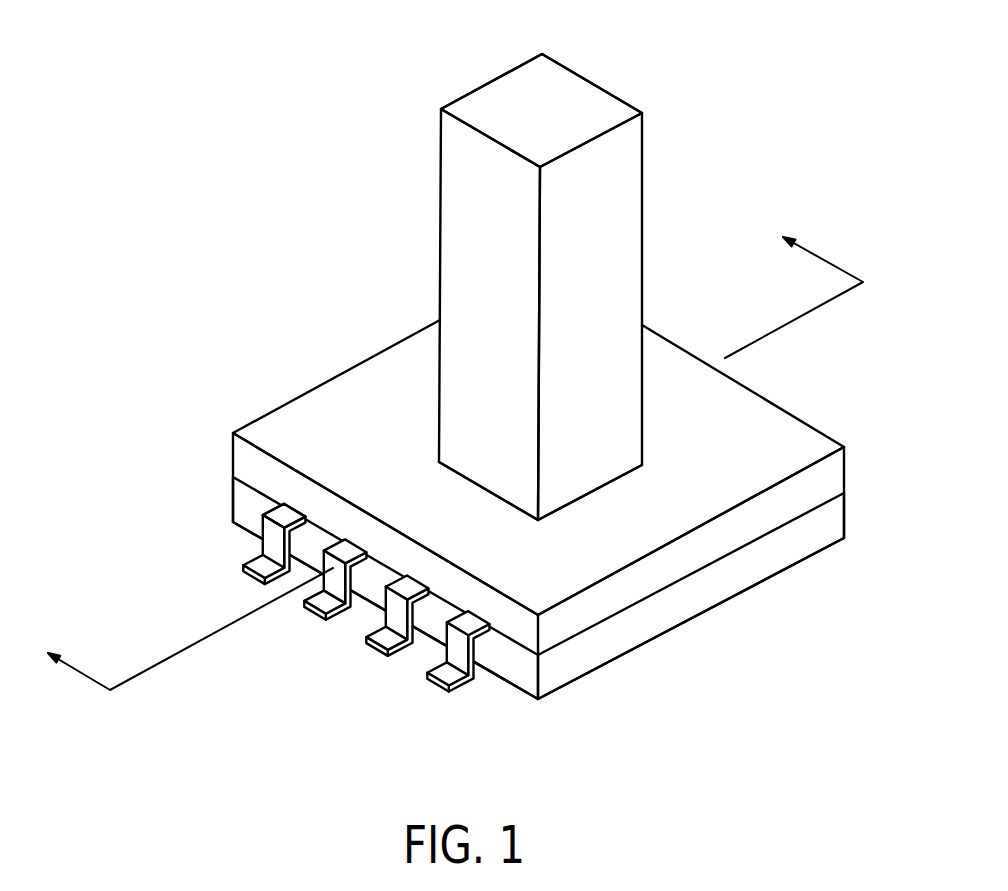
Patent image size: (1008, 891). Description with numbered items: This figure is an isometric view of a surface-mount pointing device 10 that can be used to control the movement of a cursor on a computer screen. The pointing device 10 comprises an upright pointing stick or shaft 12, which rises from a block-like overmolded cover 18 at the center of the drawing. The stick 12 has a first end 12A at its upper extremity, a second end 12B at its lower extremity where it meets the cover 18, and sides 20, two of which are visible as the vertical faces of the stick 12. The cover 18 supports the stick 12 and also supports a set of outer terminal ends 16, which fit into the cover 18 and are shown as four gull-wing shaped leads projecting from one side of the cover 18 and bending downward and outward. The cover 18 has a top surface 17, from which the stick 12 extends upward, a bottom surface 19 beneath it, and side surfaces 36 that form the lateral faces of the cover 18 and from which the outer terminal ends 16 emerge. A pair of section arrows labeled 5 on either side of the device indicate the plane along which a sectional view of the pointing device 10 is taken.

The surface-mount pointing device 10 is at (530, 377).
The pointing stick 12 is at (498, 263).
The first end 12A is at (563, 88).
The second end 12B is at (440, 422).
The sides 20 is at (501, 232).
The overmolded cover 18 is at (563, 520).
The top surface 17 is at (777, 423).
The side surfaces 36 is at (831, 483).
The bottom surface 19 is at (247, 529).
The outer terminal ends 16 is at (327, 598).
The section line 5- 5 is at (461, 480).